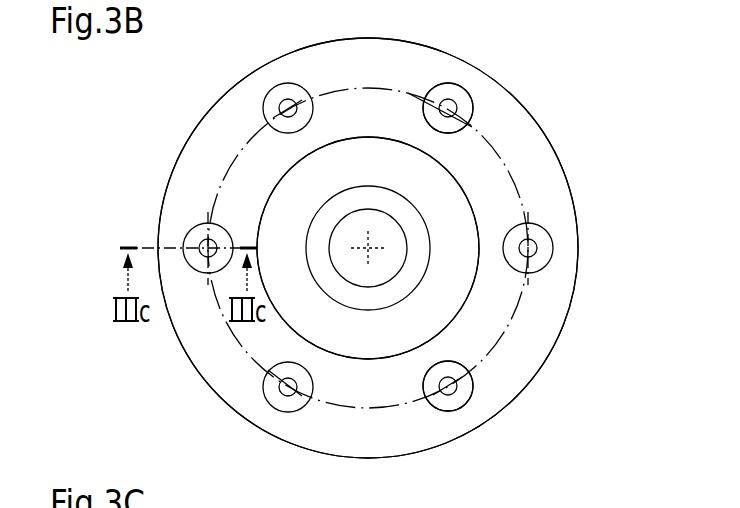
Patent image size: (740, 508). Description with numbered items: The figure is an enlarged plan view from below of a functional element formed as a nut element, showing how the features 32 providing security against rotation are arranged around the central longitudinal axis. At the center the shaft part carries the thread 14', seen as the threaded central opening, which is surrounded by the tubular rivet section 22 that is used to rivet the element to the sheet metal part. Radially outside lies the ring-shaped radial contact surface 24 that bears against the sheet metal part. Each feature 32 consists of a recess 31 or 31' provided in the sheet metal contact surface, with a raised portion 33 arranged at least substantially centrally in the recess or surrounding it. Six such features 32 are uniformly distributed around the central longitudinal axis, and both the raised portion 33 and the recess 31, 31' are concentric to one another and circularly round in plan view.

The thread 14' is at (255, 214).
The tubular rivet section 22 is at (418, 224).
The ring-shaped radial contact surface 24 is at (203, 345).
The recess 31 is at (496, 169).
The recess 31' is at (482, 429).
The feature providing security against rotation 32 is at (268, 82).
The raised portion 33 is at (448, 108).